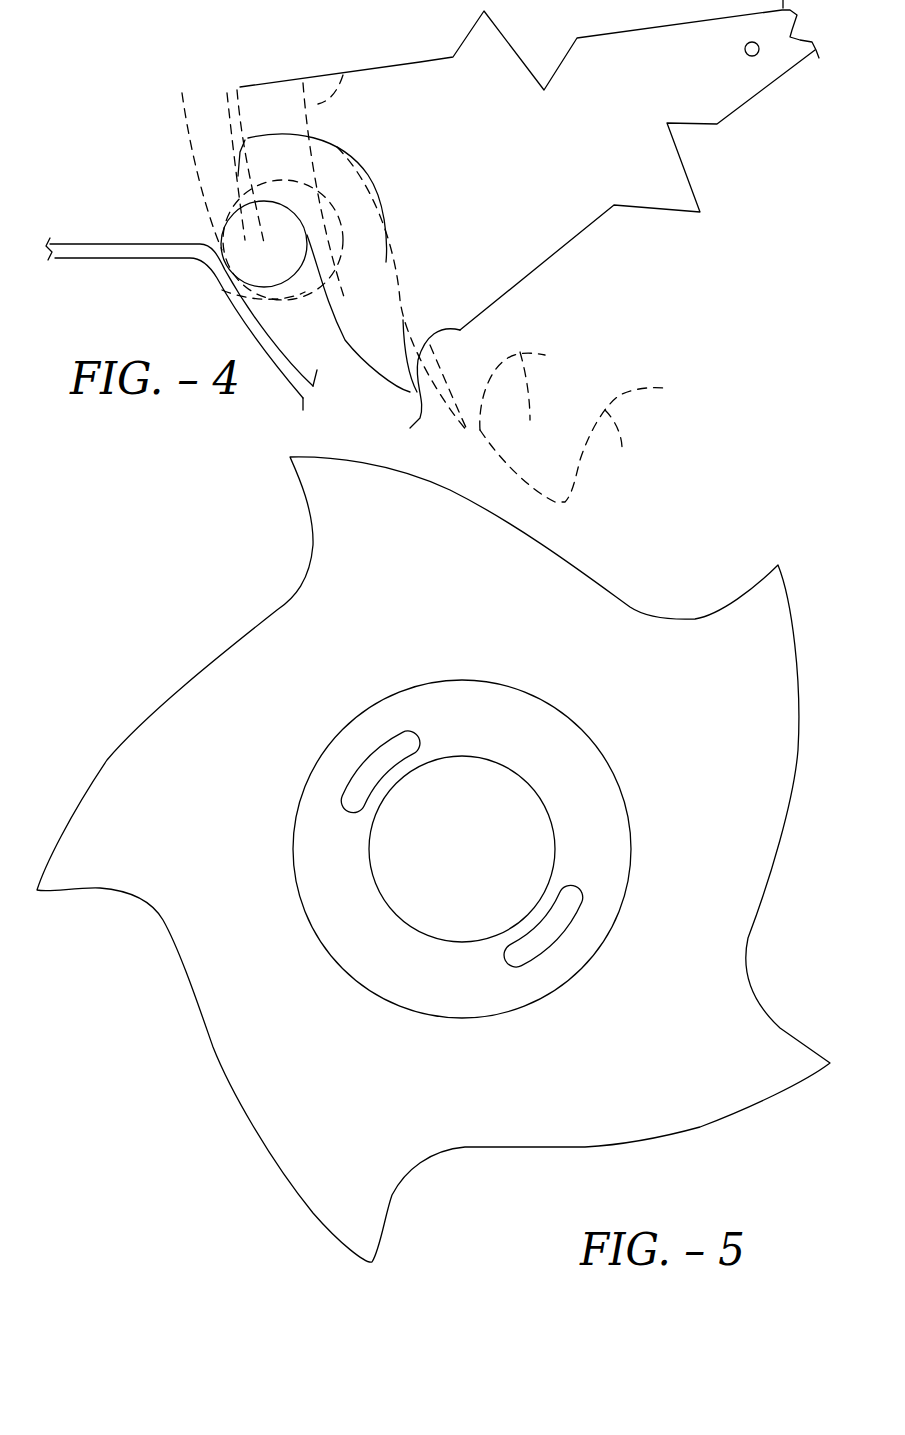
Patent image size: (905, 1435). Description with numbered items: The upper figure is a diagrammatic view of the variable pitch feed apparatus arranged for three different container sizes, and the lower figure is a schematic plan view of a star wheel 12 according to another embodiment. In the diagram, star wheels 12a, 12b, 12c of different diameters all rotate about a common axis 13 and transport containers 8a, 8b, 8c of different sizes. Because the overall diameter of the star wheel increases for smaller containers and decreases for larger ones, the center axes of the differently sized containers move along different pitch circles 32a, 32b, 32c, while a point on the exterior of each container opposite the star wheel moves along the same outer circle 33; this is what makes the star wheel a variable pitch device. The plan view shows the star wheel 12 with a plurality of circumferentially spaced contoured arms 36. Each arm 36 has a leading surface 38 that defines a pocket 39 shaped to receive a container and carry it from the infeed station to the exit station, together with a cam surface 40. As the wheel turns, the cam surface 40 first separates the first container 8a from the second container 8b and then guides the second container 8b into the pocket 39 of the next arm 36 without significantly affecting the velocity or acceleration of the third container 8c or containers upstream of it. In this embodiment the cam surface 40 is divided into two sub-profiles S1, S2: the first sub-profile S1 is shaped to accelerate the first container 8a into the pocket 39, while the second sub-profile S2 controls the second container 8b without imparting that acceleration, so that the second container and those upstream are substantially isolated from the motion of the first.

In FIG. 5, the star wheel 12 is at (252, 667).
In FIG. 4, the star wheel of first diameter 12a is at (431, 388).
In FIG. 4, the star wheel of second diameter 12b is at (530, 427).
In FIG. 4, the star wheel of third diameter 12c is at (621, 431).
In FIG. 4, the axis 13 is at (758, 53).
In FIG. 4, the first container 8a is at (255, 250).
In FIG. 4, the second container 8b is at (310, 305).
In FIG. 4, the third container 8c is at (345, 142).
In FIG. 4, the first pitch circle 32a is at (228, 99).
In FIG. 4, the second pitch circle 32b is at (237, 85).
In FIG. 4, the third pitch circle 32c is at (343, 75).
In FIG. 4, the outer circle 33 is at (190, 162).
In FIG. 5, the contoured arm 36 is at (775, 590).
In FIG. 5, the leading surface 38 is at (670, 615).
In FIG. 5, the pocket 39 is at (733, 603).
In FIG. 5, the cam surface 40 is at (786, 815).
In FIG. 5, the first sub-profile S1 is at (50, 848).
In FIG. 5, the second sub-profile S2 is at (280, 607).